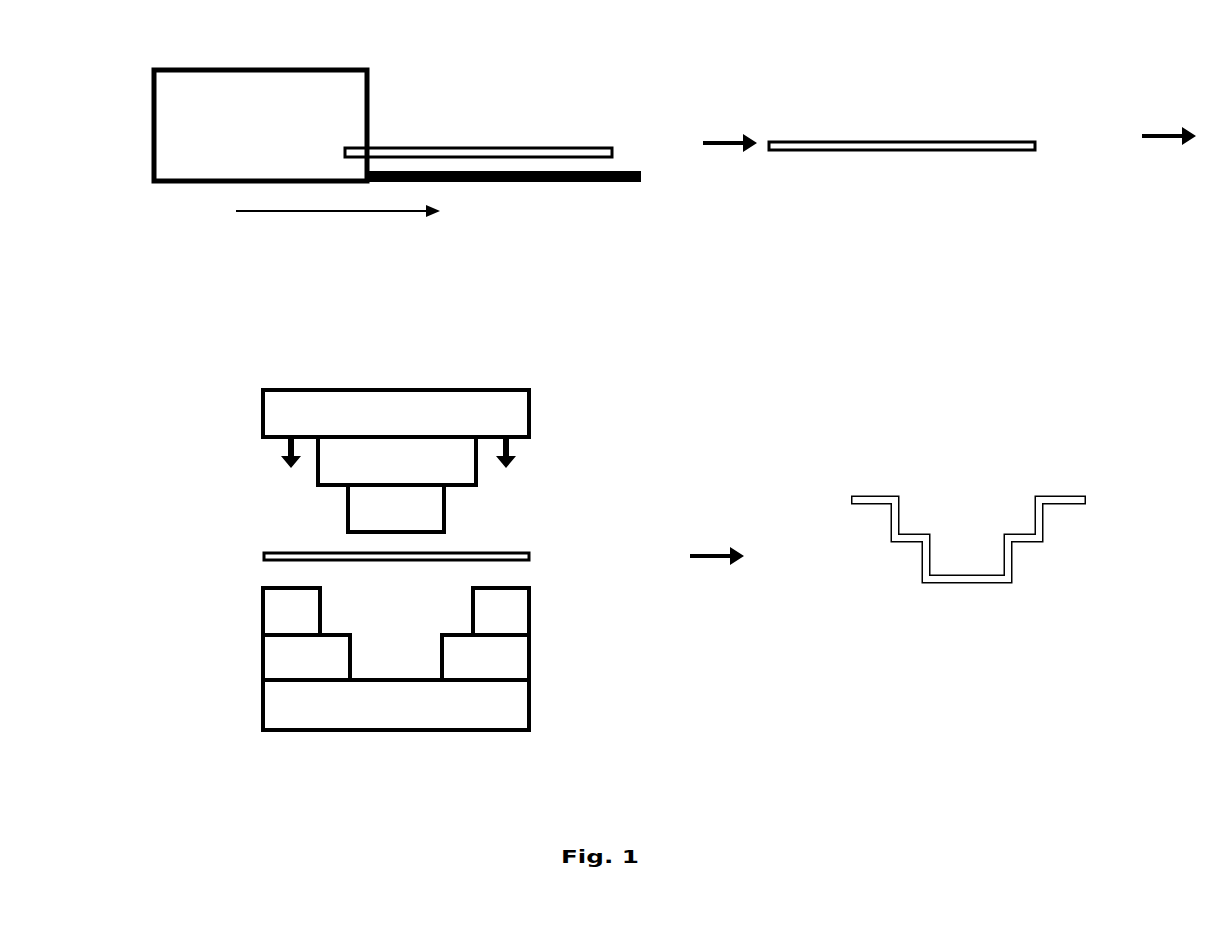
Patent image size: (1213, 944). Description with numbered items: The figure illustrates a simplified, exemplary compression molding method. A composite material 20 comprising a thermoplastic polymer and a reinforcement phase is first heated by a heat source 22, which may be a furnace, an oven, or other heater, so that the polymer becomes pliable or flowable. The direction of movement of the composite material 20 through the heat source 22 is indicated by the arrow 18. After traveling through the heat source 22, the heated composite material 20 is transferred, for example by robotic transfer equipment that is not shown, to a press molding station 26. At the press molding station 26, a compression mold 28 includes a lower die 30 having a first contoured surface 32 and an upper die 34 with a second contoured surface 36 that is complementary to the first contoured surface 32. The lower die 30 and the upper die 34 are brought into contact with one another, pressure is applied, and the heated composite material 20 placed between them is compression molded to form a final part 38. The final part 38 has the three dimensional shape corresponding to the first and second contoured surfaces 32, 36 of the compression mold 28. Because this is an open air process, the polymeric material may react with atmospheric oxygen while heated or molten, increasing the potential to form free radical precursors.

The arrow 18 is at (330, 212).
The composite material 20 is at (613, 151).
The heat source 22 is at (257, 67).
The press molding station 26 is at (582, 382).
The compression mold 28 is at (263, 417).
The lower die 30 is at (395, 732).
The first contoured surface 32 is at (460, 635).
The upper die 34 is at (395, 389).
The second contoured surface 36 is at (347, 506).
The final part 38 is at (1080, 495).